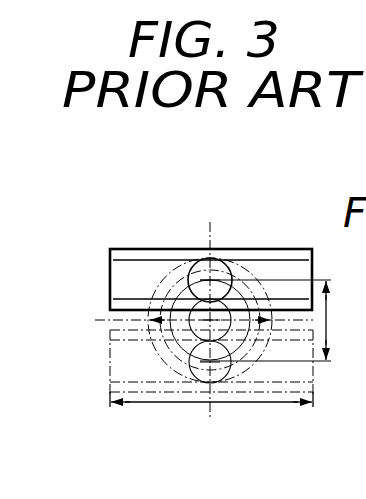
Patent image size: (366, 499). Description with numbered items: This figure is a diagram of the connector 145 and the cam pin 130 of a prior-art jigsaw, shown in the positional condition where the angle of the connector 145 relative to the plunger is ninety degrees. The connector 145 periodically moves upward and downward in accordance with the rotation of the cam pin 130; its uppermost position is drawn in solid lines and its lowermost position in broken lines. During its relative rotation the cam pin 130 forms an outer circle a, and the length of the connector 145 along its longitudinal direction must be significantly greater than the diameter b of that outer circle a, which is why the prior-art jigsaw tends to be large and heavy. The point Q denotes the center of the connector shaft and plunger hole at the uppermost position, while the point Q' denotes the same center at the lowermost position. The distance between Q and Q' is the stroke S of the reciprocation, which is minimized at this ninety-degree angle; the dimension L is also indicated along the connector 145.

The cam pin 130 is at (198, 262).
The connector 145 is at (126, 276).
The center point at uppermost position Q is at (250, 212).
The center point at lowermost position Q' is at (249, 402).
The outer circle a is at (178, 370).
The diameter of the outer circle b is at (168, 340).
The stroke S is at (271, 320).
The length L is at (280, 402).